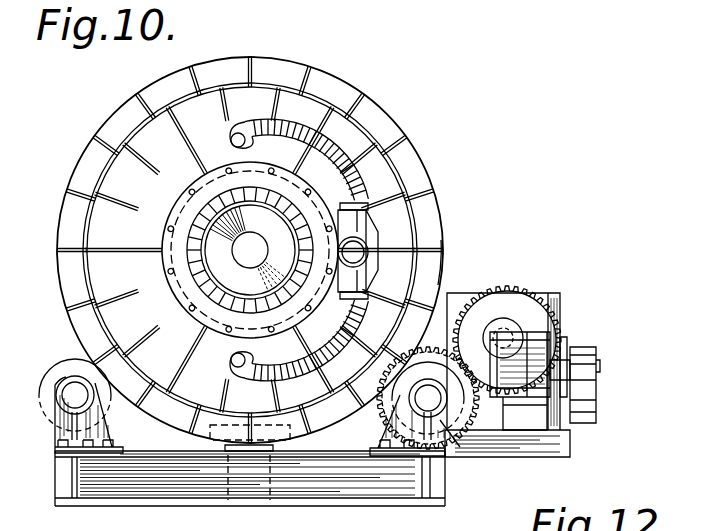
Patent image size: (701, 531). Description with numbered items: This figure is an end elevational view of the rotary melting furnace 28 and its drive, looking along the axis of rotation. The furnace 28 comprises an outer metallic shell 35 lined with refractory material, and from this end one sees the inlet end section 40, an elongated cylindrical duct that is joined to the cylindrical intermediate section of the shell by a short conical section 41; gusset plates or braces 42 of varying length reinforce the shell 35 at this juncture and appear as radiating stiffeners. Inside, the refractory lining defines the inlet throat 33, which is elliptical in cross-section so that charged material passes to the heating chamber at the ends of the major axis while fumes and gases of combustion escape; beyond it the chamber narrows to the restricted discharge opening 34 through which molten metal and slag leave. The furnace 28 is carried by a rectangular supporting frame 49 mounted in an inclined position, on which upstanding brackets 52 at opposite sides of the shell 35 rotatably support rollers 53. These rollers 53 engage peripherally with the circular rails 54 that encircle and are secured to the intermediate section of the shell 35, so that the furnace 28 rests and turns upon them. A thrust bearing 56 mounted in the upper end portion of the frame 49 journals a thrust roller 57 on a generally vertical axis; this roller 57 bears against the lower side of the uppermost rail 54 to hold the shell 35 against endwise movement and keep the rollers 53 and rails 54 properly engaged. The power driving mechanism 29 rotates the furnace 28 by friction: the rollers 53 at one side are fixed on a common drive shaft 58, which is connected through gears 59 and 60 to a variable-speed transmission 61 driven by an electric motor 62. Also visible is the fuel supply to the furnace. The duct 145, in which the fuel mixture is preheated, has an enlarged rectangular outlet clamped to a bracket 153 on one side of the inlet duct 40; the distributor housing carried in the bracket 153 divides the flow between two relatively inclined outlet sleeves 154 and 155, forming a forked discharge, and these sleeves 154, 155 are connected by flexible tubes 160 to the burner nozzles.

The rotary melting furnace 28 is at (416, 148).
The power driving mechanism 29 is at (535, 290).
The inlet throat 33 is at (192, 247).
The outlet or discharge opening 34 is at (243, 263).
The outer metallic casing or shell 35 is at (415, 228).
The inlet end section 40 is at (166, 208).
The short conical section 41 is at (348, 100).
The gusset plates or braces 42 is at (185, 139).
The rectangular supporting frame 49 is at (70, 472).
The upstanding brackets 52 is at (58, 432).
The rollers 53 is at (64, 362).
The circular rails 54 is at (442, 264).
The thrust bearing 56 is at (274, 497).
The thrust roller 57 is at (218, 422).
The common drive shaft 58 is at (426, 404).
The gear 59 is at (507, 340).
The gear 60 is at (506, 294).
The variable-speed transmission 61 is at (590, 342).
The electric motor 62 is at (540, 346).
The duct 145 is at (370, 258).
The bracket 153 is at (347, 187).
The outlet sleeve 154 is at (368, 213).
The outlet sleeve 155 is at (362, 302).
The flexible tubes 160 is at (360, 148).